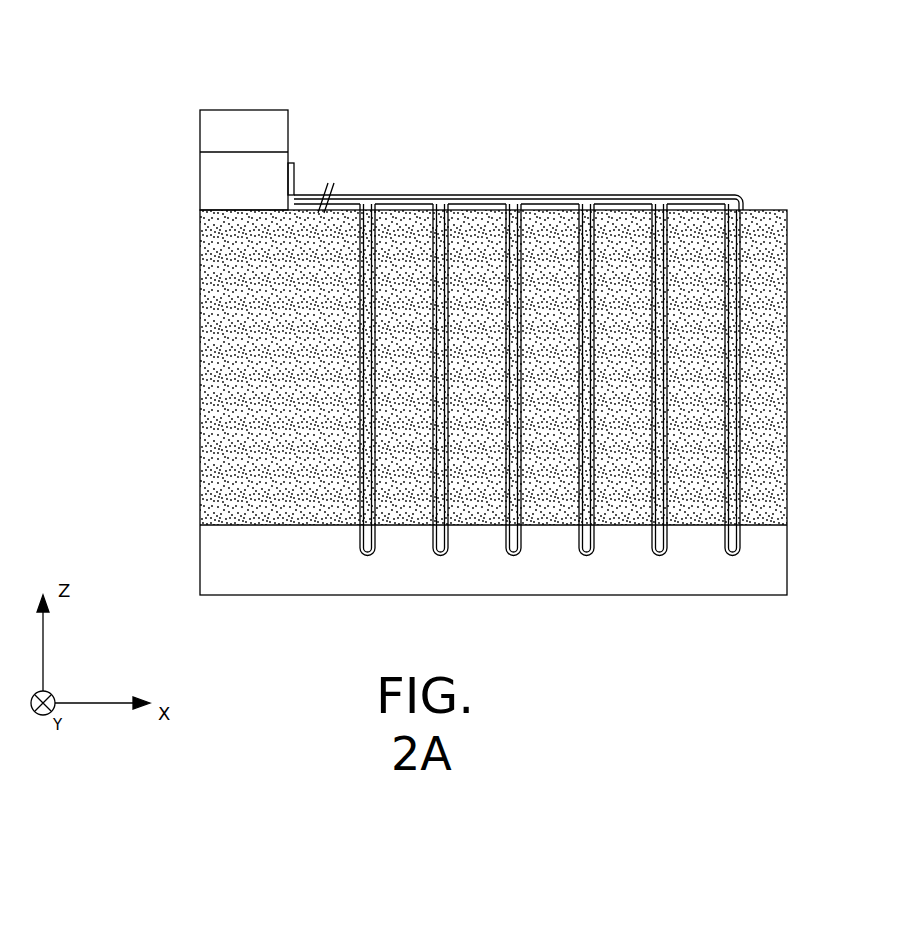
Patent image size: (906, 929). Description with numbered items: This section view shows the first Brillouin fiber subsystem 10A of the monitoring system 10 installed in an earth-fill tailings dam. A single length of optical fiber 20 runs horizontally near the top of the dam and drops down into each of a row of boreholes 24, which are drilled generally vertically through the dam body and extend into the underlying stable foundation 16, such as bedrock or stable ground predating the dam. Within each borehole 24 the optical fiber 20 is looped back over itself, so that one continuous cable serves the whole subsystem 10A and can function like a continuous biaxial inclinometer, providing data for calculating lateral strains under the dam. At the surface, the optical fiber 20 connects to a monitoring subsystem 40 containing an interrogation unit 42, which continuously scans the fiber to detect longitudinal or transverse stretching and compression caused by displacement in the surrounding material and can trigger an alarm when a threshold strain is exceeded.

The system 10 is at (436, 102).
The first Brillouin fiber subsystem 10A is at (493, 352).
The underlying stable foundation 16 is at (297, 565).
The optical fiber 20 is at (448, 194).
The boreholes 24 is at (360, 337).
The monitoring subsystem 40 is at (200, 182).
The interrogation unit 42 is at (295, 164).